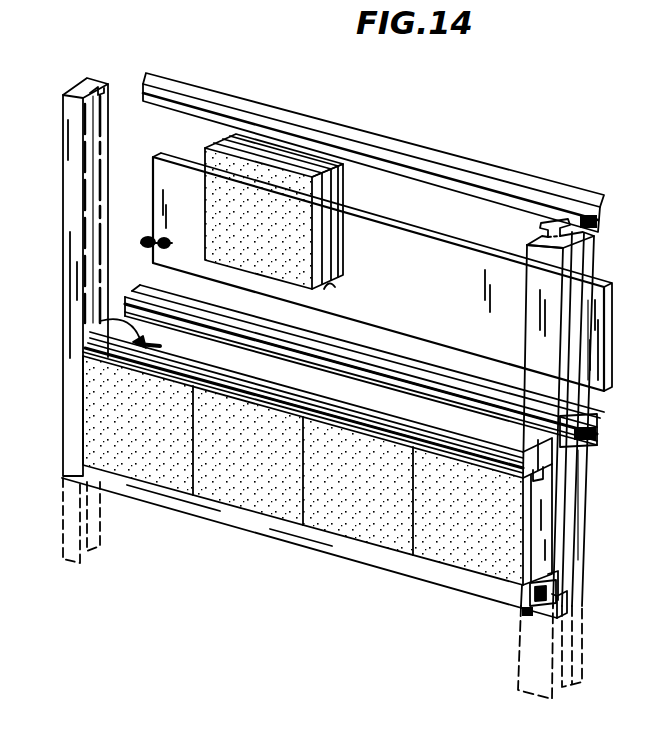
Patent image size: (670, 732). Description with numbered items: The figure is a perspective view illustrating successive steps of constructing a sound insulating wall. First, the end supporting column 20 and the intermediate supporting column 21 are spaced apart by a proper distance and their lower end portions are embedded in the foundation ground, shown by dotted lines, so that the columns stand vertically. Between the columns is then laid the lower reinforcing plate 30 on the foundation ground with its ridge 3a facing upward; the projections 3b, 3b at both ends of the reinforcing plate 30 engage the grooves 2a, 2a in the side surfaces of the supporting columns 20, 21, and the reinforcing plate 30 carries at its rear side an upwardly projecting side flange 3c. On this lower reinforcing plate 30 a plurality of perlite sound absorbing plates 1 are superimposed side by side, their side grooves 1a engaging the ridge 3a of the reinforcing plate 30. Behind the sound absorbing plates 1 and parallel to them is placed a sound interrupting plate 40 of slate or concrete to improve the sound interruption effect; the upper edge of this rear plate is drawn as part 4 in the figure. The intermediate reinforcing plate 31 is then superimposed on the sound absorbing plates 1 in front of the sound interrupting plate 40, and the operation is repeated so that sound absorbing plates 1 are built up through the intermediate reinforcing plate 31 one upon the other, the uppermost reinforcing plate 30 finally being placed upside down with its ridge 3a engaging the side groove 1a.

The perlite sound absorbing plate 1 is at (281, 201).
The groove 1a is at (100, 316).
The groove 2a is at (96, 140).
The ridge 3a is at (556, 568).
The projection 3b is at (143, 80).
The side flange 3c is at (598, 433).
The back plate 4 is at (613, 308).
The end supporting column 20 is at (73, 229).
The intermediate supporting column 21 is at (574, 362).
The reinforcing plate 30 is at (362, 122).
The intermediate reinforcing plate 31 is at (418, 370).
The sound interrupting plate 40 is at (556, 516).